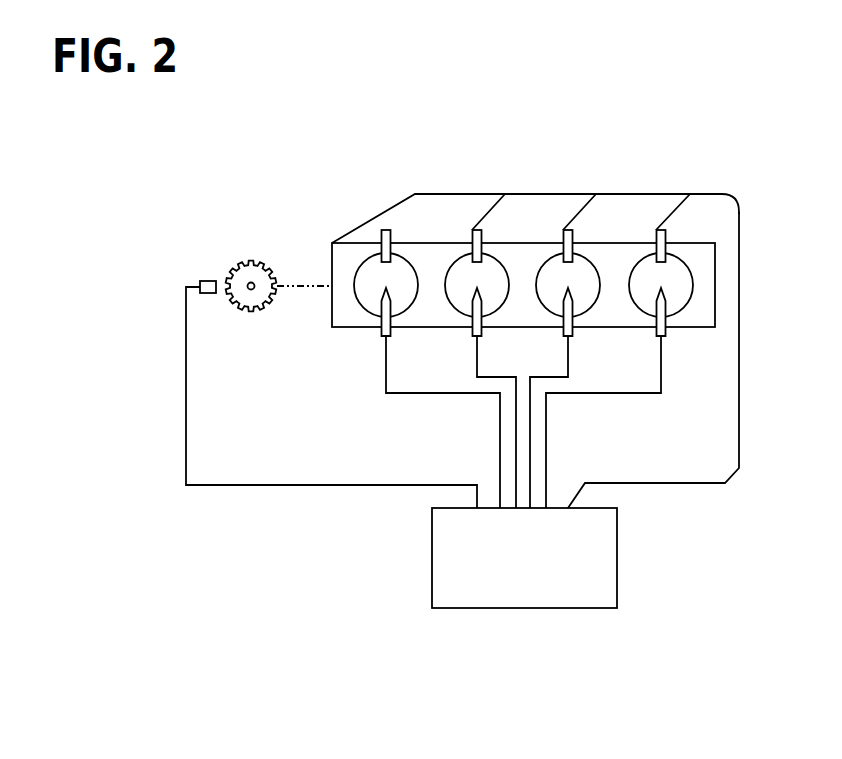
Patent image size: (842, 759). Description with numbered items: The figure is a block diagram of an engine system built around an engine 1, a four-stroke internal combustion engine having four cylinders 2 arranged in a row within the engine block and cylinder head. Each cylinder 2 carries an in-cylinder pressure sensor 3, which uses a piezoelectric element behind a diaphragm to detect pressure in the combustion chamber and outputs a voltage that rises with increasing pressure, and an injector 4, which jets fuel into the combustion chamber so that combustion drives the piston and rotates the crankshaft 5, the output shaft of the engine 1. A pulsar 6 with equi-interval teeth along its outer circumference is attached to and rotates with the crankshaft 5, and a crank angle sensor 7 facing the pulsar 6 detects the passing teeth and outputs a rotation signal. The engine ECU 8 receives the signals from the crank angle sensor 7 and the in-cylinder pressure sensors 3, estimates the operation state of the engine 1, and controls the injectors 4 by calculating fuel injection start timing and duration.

The engine 1 is at (715, 312).
The cylinder 2 is at (406, 308).
The in-cylinder pressure sensor 3 is at (391, 237).
The injector 4 is at (379, 298).
The crankshaft 5 is at (250, 290).
The pulsar 6 is at (268, 306).
The crank angle sensor 7 is at (207, 281).
The engine ECU 8 is at (617, 557).